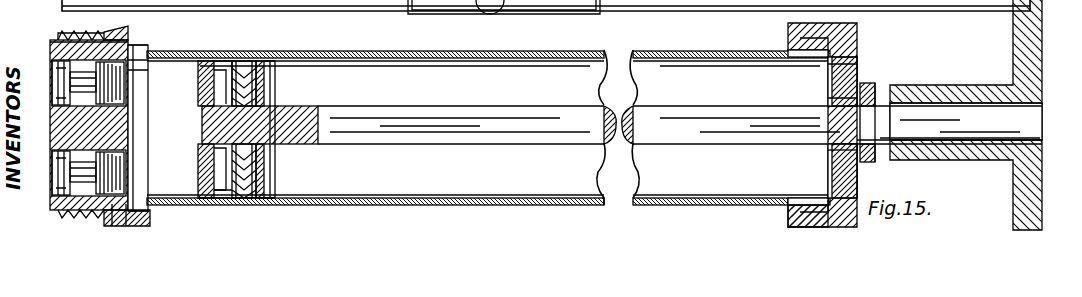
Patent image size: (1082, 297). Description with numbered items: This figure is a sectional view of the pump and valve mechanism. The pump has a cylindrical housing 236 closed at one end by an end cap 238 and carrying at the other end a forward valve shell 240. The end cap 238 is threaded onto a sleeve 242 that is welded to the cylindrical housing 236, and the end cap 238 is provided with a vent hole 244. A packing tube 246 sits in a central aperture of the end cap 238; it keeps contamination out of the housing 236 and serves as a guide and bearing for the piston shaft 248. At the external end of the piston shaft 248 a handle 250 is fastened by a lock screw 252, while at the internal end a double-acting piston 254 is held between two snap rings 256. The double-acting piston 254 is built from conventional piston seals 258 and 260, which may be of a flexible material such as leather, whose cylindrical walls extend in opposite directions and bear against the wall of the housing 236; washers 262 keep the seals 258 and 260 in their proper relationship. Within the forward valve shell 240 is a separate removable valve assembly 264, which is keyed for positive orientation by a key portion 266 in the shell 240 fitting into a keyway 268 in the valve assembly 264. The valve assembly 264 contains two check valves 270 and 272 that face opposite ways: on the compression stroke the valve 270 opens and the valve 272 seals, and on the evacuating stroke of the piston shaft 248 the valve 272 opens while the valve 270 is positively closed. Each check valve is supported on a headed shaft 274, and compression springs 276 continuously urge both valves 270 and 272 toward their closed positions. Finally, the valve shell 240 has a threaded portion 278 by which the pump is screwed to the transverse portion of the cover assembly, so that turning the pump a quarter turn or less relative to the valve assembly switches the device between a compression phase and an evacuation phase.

The cylindrical housing 236 is at (440, 52).
The end cap 238 is at (857, 44).
The forward valve shell 240 is at (155, 214).
The sleeve 242 is at (790, 204).
The vent hole 244 is at (848, 70).
The packing tube 246 is at (830, 150).
The piston shaft 248 is at (368, 126).
The handle 250 is at (1022, 44).
The lock screw 252 is at (892, 138).
The double-acting piston 254 is at (200, 80).
The snap rings 256 is at (212, 160).
The piston seal 258 is at (266, 186).
The piston seal 260 is at (218, 190).
The washers 262 is at (212, 90).
The valve assembly 264 is at (43, 45).
The key portion 266 is at (118, 234).
The keyway 268 is at (72, 232).
The check valve 270 is at (58, 102).
The check valve 272 is at (89, 118).
The headed shaft 274 is at (147, 48).
The springs 276 is at (150, 58).
The threaded portion 278 is at (60, 38).